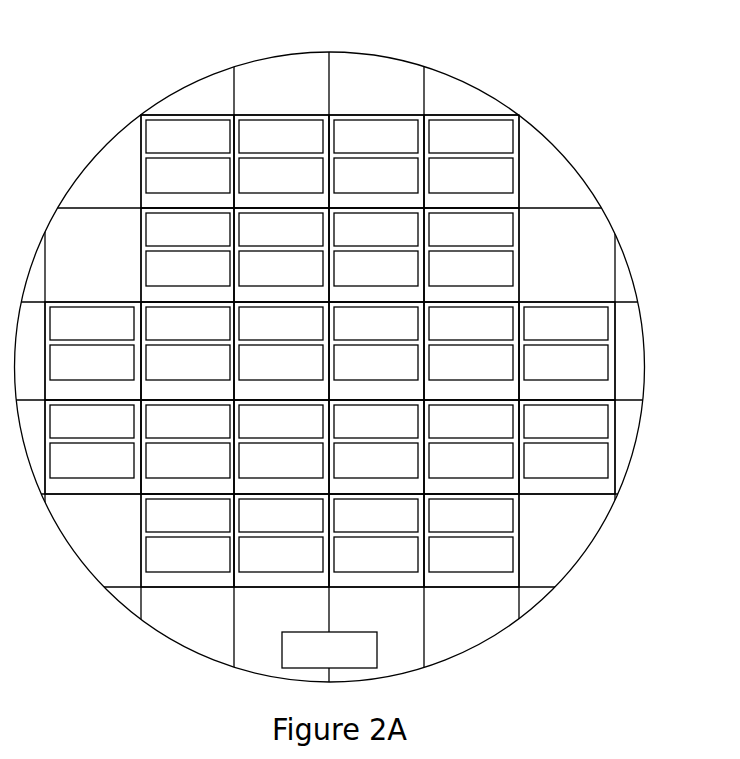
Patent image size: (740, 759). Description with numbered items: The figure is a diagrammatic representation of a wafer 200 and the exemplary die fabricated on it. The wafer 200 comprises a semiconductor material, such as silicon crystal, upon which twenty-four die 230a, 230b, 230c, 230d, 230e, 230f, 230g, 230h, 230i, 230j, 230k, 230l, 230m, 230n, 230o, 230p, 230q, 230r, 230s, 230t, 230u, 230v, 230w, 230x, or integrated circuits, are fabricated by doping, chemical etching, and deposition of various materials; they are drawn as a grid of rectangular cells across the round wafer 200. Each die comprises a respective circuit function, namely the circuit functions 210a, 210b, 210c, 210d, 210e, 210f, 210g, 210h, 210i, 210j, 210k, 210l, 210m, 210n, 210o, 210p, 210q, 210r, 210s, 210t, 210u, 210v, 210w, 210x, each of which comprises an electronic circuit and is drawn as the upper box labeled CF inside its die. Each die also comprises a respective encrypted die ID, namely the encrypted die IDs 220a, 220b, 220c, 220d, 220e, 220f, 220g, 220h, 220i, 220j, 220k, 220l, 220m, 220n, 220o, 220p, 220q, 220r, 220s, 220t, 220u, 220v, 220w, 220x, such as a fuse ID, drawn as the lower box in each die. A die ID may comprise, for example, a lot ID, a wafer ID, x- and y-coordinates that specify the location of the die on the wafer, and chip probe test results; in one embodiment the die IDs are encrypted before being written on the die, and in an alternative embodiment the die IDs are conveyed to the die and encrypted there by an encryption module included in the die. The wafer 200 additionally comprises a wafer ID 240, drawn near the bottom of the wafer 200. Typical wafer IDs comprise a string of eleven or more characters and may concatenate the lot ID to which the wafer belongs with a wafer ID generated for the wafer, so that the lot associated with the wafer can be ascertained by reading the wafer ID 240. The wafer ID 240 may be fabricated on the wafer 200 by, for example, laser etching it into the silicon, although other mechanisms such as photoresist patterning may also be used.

The wafer 200 is at (183, 37).
The wafer ID 240 is at (329, 650).
The circuit function 210a is at (188, 136).
The encrypted die ID 220a is at (188, 175).
The die 230a is at (187, 162).
The circuit function 210b is at (281, 136).
The encrypted die ID 220b is at (281, 175).
The die 230b is at (281, 162).
The circuit function 210c is at (376, 136).
The encrypted die ID 220c is at (376, 175).
The die 230c is at (376, 162).
The circuit function 210d is at (471, 136).
The encrypted die ID 220d is at (471, 175).
The die 230d is at (471, 162).
The circuit function 210e is at (188, 229).
The encrypted die ID 220e is at (188, 268).
The die 230e is at (187, 255).
The circuit function 210f is at (281, 229).
The encrypted die ID 220f is at (281, 268).
The die 230f is at (281, 255).
The circuit function 210g is at (376, 229).
The encrypted die ID 220g is at (376, 268).
The die 230g is at (376, 255).
The circuit function 210h is at (471, 229).
The encrypted die ID 220h is at (471, 268).
The die 230h is at (471, 255).
The circuit function 210i is at (92, 323).
The encrypted die ID 220i is at (92, 362).
The die 230i is at (93, 351).
The circuit function 210j is at (188, 323).
The encrypted die ID 220j is at (188, 362).
The die 230j is at (187, 351).
The circuit function 210k is at (281, 323).
The encrypted die ID 220k is at (281, 362).
The die 230k is at (281, 351).
The circuit function 210l is at (376, 323).
The encrypted die ID 220l is at (376, 362).
The die 230l is at (376, 351).
The circuit function 210m is at (471, 323).
The encrypted die ID 220m is at (471, 362).
The die 230m is at (471, 351).
The circuit function 210n is at (566, 323).
The encrypted die ID 220n is at (566, 362).
The die 230n is at (567, 351).
The circuit function 210o is at (92, 421).
The encrypted die ID 220o is at (92, 460).
The die 230o is at (93, 447).
The circuit function 210p is at (188, 421).
The encrypted die ID 220p is at (188, 460).
The die 230p is at (187, 447).
The circuit function 210q is at (281, 421).
The encrypted die ID 220q is at (281, 460).
The die 230q is at (281, 447).
The circuit function 210r is at (376, 421).
The encrypted die ID 220r is at (376, 460).
The die 230r is at (376, 447).
The circuit function 210s is at (471, 421).
The encrypted die ID 220s is at (471, 460).
The die 230s is at (471, 447).
The circuit function 210t is at (566, 421).
The encrypted die ID 220t is at (566, 460).
The die 230t is at (567, 447).
The circuit function 210u is at (188, 515).
The encrypted die ID 220u is at (188, 554).
The die 230u is at (187, 541).
The circuit function 210v is at (281, 515).
The encrypted die ID 220v is at (281, 554).
The die 230v is at (281, 541).
The circuit function 210w is at (376, 515).
The encrypted die ID 220w is at (376, 554).
The die 230w is at (376, 541).
The circuit function 210x is at (471, 515).
The encrypted die ID 220x is at (471, 554).
The die 230x is at (471, 541).